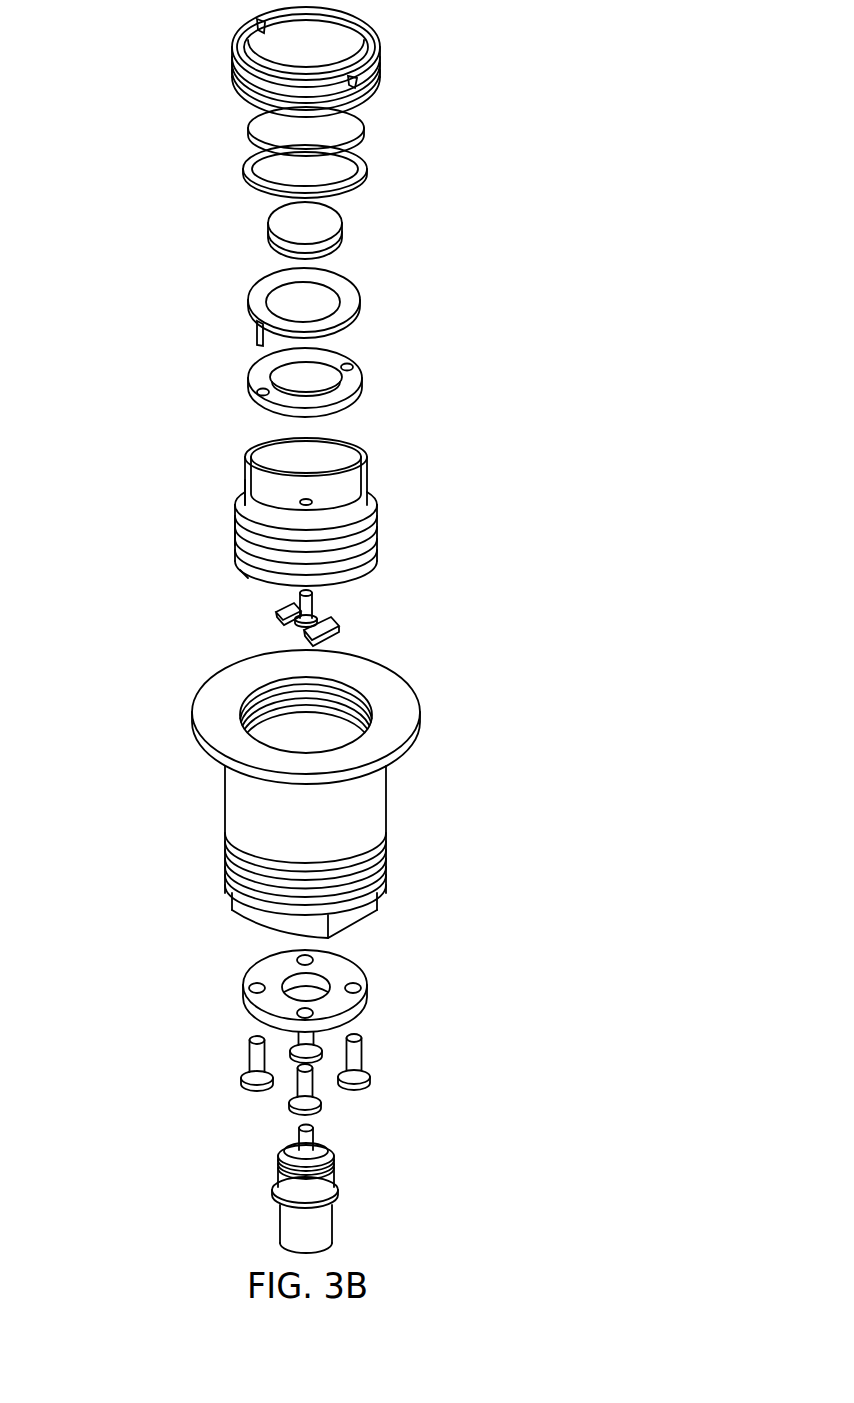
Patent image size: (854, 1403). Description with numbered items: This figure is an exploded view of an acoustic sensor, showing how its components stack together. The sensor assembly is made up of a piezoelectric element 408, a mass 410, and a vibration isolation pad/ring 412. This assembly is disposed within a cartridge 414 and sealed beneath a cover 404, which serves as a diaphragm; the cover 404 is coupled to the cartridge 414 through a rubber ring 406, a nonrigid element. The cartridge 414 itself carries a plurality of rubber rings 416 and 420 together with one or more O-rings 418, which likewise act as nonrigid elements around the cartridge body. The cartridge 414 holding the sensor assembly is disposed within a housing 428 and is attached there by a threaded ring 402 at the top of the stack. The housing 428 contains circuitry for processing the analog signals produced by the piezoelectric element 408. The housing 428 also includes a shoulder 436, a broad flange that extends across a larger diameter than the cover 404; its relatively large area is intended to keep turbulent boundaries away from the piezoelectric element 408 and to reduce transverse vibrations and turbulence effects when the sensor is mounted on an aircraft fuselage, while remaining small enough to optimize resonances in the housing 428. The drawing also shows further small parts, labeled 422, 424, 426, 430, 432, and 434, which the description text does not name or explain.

The threaded ring 402 is at (380, 44).
The cover 404 is at (358, 118).
The rubber ring 406 is at (363, 160).
The piezoelectric element 408 is at (340, 222).
The mass 410 is at (357, 316).
The vibration isolation pad/ring 412 is at (361, 393).
The cartridge 414 is at (357, 505).
The rubber ring 416 is at (231, 490).
The O-ring 418 is at (229, 541).
The rubber ring 420 is at (239, 568).
The plate 422 is at (333, 622).
The plate 424 is at (275, 620).
The tab 426 is at (257, 333).
The housing 428 is at (402, 810).
The base disc with holes 430 is at (366, 973).
The rivets 432 is at (360, 1057).
The connector 434 is at (330, 1172).
The shoulder 436 is at (200, 747).